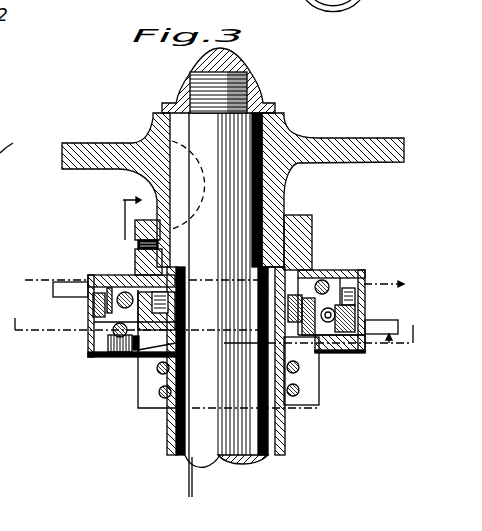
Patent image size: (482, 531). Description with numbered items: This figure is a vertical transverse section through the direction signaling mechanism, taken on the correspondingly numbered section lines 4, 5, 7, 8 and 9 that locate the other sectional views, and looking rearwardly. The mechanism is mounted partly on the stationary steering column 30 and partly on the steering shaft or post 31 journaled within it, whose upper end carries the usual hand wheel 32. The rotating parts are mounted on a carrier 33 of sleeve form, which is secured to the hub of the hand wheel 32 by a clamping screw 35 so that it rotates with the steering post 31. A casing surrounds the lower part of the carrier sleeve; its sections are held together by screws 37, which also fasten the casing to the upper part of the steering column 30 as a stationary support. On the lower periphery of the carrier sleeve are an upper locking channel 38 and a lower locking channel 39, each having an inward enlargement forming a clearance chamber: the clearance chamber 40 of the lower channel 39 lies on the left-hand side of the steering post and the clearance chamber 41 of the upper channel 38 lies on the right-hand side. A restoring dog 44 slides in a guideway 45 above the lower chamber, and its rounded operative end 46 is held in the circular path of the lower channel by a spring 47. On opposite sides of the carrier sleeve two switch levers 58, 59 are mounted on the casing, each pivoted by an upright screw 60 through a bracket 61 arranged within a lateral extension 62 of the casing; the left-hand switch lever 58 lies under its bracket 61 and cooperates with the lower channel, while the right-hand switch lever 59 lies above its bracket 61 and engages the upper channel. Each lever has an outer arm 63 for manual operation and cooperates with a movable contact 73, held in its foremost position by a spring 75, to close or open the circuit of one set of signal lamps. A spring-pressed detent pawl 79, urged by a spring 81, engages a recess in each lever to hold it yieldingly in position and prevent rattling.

The section line 4- 4 is at (153, 354).
The section line 5- 5 is at (214, 283).
The section line 7- 7 is at (404, 325).
The section line 8- 8 is at (131, 331).
The section line 9- 9 is at (399, 352).
The steering column 30 is at (285, 452).
The steering shaft or post 31 is at (213, 447).
The hand wheel 32 is at (371, 139).
The carrier 33 is at (297, 220).
The clamping screw 35 is at (135, 238).
The screws 37 is at (160, 395).
The upper locking channel 38 is at (318, 272).
The lower locking channel 39 is at (127, 358).
The clearance chamber 40 is at (327, 348).
The clearance chamber 41 is at (137, 245).
The restoring dog 44 is at (176, 262).
The guideway 45 is at (316, 262).
The operative end 46 is at (340, 350).
The spring 47 is at (140, 348).
The switch lever 58 is at (405, 348).
The switch lever 59 is at (88, 277).
The upright screw 60 is at (97, 272).
The bracket 61 is at (112, 360).
The lateral extension 62 is at (100, 337).
The outer arm 63 is at (16, 140).
The movable contact 73 is at (138, 270).
The spring 75 is at (110, 362).
The detent pawl 79 is at (93, 300).
The spring 81 is at (100, 315).